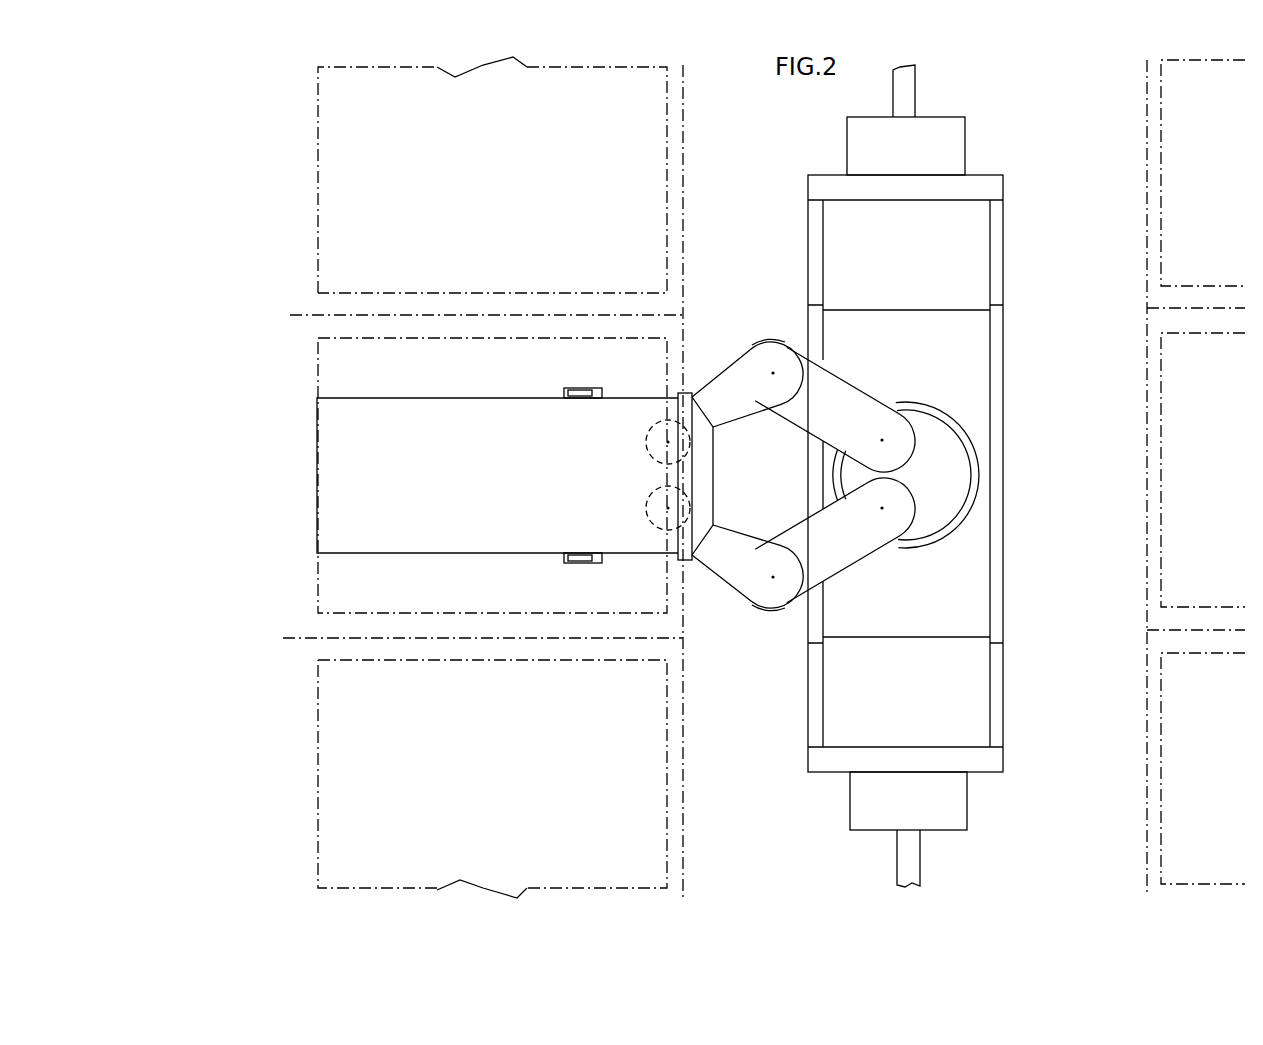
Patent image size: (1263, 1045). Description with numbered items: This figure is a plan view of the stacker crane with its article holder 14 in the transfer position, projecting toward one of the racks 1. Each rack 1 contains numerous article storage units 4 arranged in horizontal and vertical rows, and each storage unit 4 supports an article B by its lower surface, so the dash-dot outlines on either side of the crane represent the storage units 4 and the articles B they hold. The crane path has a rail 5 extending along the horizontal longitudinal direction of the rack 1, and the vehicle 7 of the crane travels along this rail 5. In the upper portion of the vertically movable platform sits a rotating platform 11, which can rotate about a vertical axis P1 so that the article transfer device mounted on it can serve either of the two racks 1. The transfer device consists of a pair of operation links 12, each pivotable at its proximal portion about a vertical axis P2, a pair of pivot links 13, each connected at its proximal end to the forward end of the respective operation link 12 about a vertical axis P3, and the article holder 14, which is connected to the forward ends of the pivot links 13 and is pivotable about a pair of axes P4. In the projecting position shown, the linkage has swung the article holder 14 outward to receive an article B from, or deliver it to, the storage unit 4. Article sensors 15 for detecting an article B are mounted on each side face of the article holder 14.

The rack 1 is at (683, 188).
The article storage unit 4 is at (333, 305).
The rail 5 is at (905, 866).
The vehicle 7 is at (950, 803).
The rotating platform 11 is at (808, 693).
The operation link 12 is at (845, 395).
The pivot link 13 is at (733, 385).
The article holder 14 is at (330, 421).
The article sensor 15 is at (572, 388).
The article B is at (335, 137).
The vertical axis P1 is at (937, 532).
The vertical axis P2 is at (882, 440).
The vertical axis P3 is at (773, 373).
The axis P4 is at (650, 503).